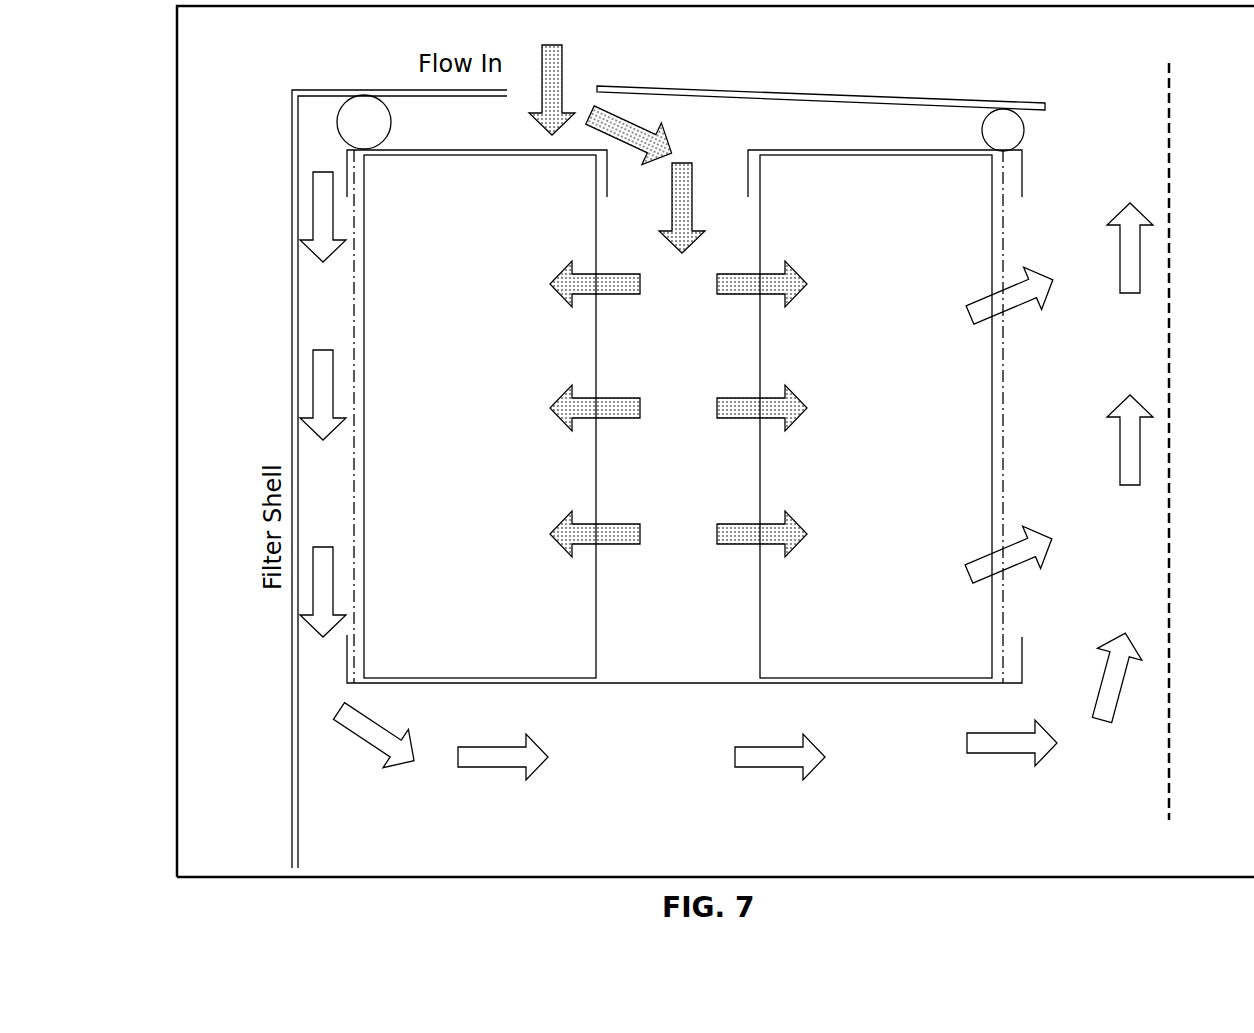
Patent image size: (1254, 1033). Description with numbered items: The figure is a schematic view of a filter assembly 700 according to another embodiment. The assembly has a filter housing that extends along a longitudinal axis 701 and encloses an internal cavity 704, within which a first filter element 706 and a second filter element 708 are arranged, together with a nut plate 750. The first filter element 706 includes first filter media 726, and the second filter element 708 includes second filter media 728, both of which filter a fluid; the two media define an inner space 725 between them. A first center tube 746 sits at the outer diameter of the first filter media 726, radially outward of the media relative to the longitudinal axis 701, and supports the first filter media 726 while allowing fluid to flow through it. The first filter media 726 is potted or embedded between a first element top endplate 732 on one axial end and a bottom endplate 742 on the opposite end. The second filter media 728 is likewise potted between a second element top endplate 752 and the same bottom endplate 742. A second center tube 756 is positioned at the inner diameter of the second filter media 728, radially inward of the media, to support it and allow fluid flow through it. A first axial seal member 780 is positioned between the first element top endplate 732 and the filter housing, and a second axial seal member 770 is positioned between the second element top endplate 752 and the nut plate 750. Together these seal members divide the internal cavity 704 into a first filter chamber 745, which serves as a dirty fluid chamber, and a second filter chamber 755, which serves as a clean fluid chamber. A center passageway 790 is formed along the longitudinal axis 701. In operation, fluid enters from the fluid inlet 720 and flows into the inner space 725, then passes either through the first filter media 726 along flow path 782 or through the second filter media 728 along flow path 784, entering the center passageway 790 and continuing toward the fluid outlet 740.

The filter assembly 700 is at (150, 82).
The longitudinal axis 701 is at (1170, 228).
The internal cavity 704 is at (320, 458).
The first filter element 706 is at (372, 230).
The second filter element 708 is at (810, 172).
The fluid inlet 720 is at (597, 86).
The inner space 725 is at (636, 606).
The first filter media 726 is at (400, 560).
The second filter media 728 is at (960, 647).
The first element top endplate 732 is at (460, 150).
The fluid outlet 740 is at (1045, 106).
The bottom endplate 742 is at (475, 688).
The first filter chamber 745 is at (653, 125).
The first center tube 746 is at (348, 633).
The nut plate 750 is at (925, 100).
The second element top endplate 752 is at (960, 150).
The second filter chamber 755 is at (1120, 762).
The second center tube 756 is at (1003, 615).
The second axial seal member 770 is at (1008, 122).
The first axial seal member 780 is at (363, 122).
The flow path 782 is at (612, 283).
The flow path 784 is at (742, 285).
The center passageway 790 is at (1120, 552).